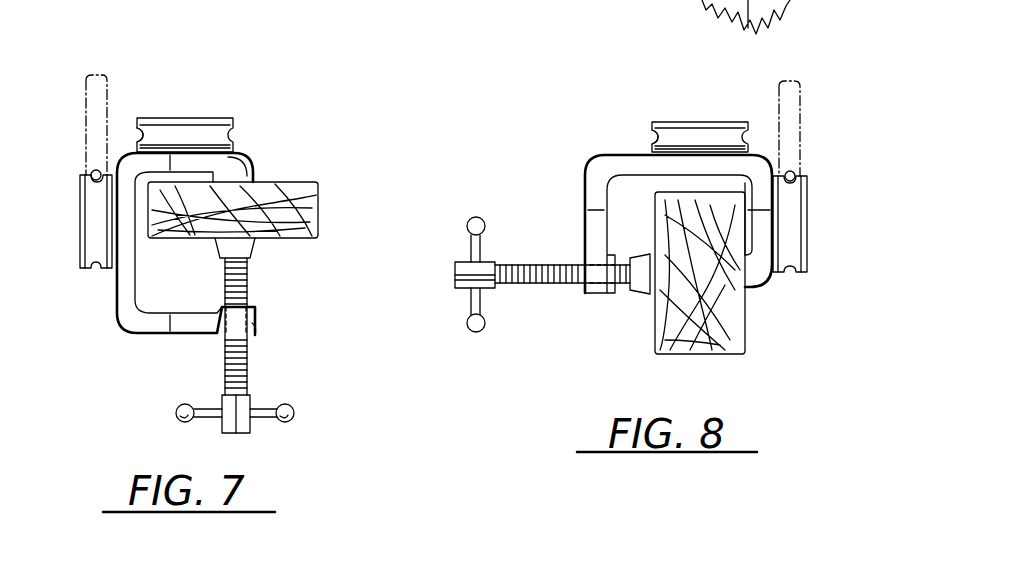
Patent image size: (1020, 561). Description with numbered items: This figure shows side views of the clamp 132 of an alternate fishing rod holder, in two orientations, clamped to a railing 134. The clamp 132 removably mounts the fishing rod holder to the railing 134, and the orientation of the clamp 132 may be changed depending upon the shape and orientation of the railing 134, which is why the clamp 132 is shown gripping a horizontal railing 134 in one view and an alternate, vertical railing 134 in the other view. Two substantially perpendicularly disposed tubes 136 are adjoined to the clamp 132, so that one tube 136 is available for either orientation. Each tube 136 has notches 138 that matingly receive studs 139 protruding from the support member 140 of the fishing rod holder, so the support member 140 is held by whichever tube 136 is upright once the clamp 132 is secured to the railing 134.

In FIG. 7, the clamp 132 is at (135, 333).
In FIG. 8, the clamp 132 is at (613, 152).
In FIG. 7, the railing 134 is at (300, 180).
In FIG. 8, the railing 134 is at (742, 333).
In FIG. 7, the tubes 136 is at (197, 118).
In FIG. 8, the tubes 136 is at (707, 120).
In FIG. 7, the notches 138 is at (137, 130).
In FIG. 8, the notches 138 is at (650, 135).
In FIG. 7, the studs 139 is at (92, 173).
In FIG. 8, the studs 139 is at (792, 172).
In FIG. 7, the support member 140 is at (107, 97).
In FIG. 8, the support member 140 is at (802, 115).